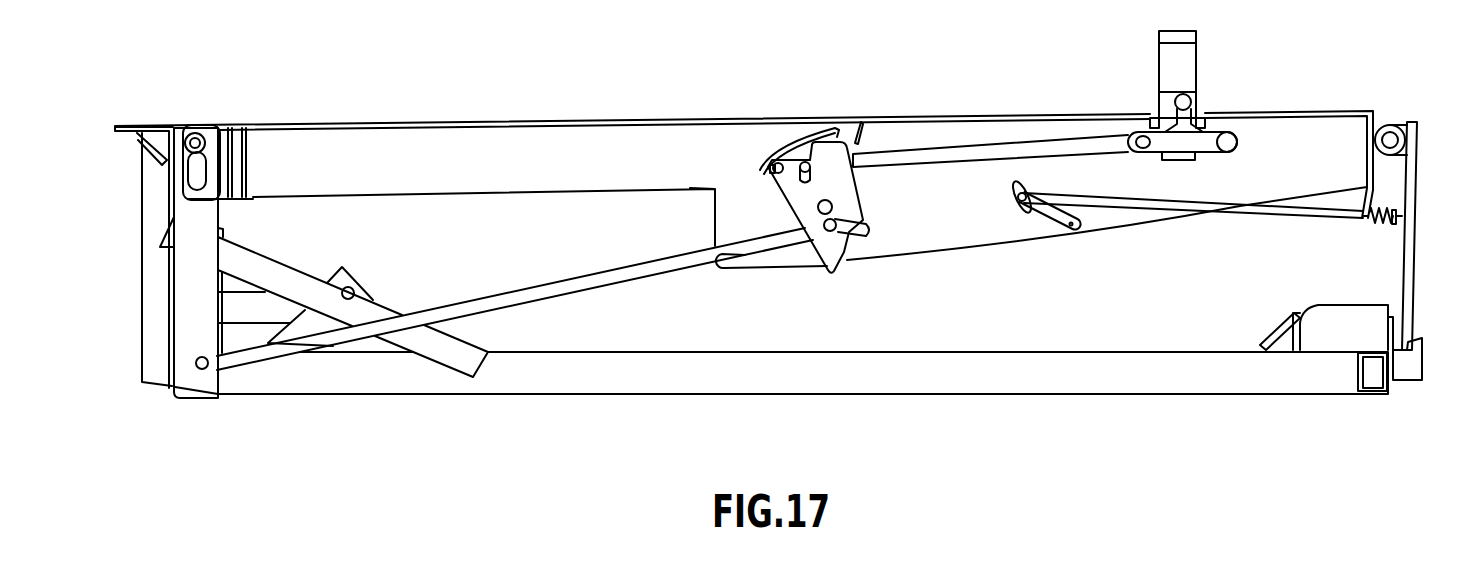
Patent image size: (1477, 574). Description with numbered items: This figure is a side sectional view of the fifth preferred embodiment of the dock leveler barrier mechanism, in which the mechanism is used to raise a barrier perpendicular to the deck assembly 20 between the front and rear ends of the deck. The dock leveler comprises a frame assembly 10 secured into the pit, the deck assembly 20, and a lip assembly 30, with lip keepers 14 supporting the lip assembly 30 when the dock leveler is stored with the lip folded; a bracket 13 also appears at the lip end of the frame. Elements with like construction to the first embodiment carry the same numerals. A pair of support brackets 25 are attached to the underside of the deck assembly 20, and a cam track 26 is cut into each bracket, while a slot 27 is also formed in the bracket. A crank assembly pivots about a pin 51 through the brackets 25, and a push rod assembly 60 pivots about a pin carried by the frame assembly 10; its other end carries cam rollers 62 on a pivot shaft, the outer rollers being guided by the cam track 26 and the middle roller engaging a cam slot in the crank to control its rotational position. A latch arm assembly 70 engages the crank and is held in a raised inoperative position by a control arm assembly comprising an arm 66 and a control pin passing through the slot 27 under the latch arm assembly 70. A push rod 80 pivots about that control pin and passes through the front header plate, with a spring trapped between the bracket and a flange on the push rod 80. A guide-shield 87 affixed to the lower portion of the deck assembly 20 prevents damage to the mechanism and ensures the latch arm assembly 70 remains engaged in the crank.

The frame assembly 10 is at (750, 358).
The bracket 13 is at (1339, 320).
The lip keepers 14 is at (1423, 380).
The deck assembly 20 is at (625, 118).
The support brackets 25 is at (913, 257).
The cam track 26 is at (742, 258).
The slot 27 is at (1012, 207).
The lip assembly 30 is at (1413, 284).
The pin 51 is at (833, 202).
The push rod assembly 60 is at (571, 280).
The cam rollers 62 is at (857, 234).
The arm 66 is at (1053, 226).
The latch arm assembly 70 is at (918, 152).
The push rod 80 is at (1284, 217).
The guide-shield 87 is at (779, 140).